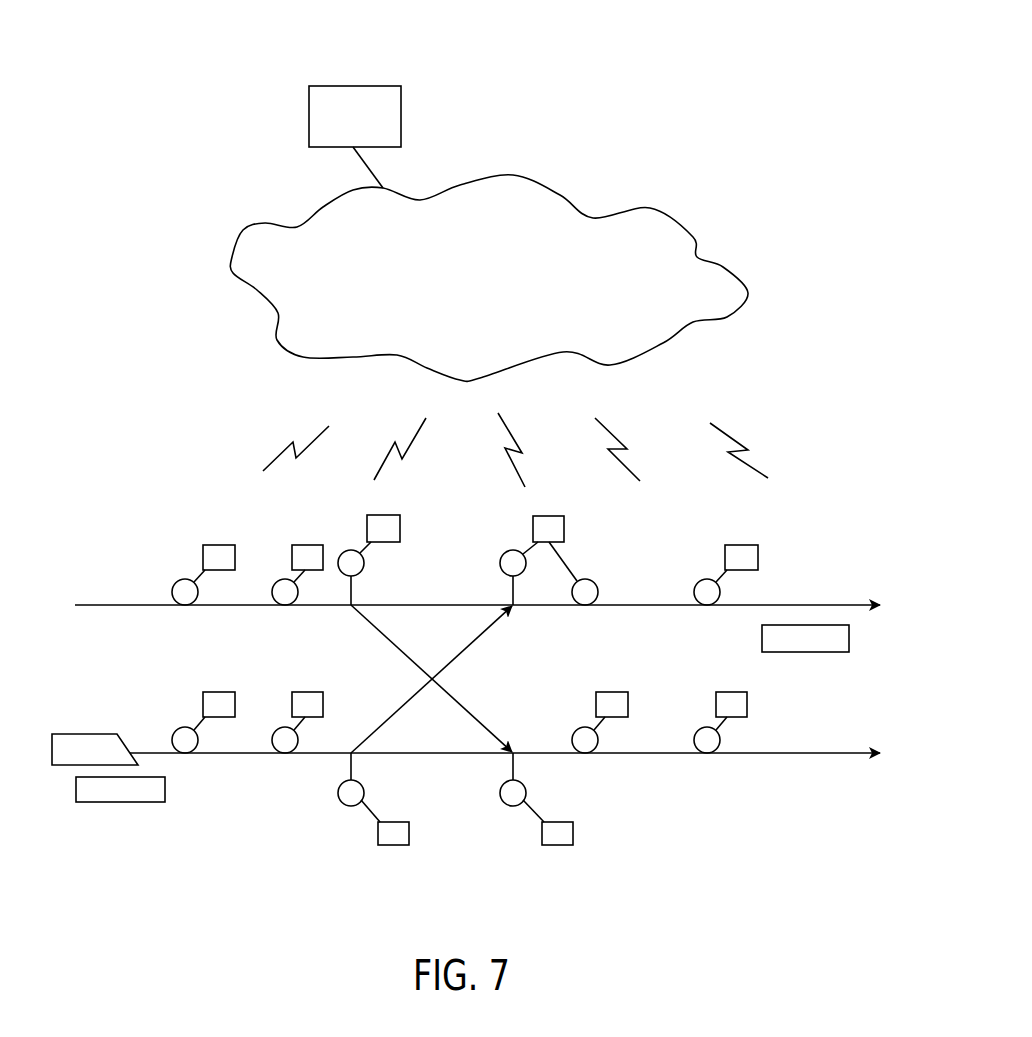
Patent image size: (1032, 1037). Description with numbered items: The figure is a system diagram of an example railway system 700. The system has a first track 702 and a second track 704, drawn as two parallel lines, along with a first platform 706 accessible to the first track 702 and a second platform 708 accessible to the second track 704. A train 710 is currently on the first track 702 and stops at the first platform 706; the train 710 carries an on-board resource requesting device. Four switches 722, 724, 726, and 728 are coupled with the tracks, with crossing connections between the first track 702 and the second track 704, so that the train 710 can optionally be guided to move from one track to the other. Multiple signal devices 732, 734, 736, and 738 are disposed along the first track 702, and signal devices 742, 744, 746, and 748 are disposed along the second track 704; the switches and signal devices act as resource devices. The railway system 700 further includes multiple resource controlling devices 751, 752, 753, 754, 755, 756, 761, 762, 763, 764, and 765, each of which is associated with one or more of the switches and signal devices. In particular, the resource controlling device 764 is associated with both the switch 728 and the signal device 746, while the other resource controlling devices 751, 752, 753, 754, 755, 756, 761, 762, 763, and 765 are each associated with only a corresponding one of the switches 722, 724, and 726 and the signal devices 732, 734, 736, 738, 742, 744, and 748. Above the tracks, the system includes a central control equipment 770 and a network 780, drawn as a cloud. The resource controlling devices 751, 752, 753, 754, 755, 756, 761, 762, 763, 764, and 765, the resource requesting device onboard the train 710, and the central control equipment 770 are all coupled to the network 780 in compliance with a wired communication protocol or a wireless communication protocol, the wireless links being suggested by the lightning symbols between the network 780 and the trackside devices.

The railway system 700 is at (694, 66).
The first track 702 is at (848, 753).
The second track 704 is at (848, 605).
The first platform 706 is at (118, 802).
The second platform 708 is at (805, 652).
The train 710 is at (85, 733).
The switch 722 is at (345, 806).
The switch 724 is at (507, 806).
The switch 726 is at (364, 565).
The switch 728 is at (500, 565).
The signal device 732 is at (188, 753).
The signal device 734 is at (285, 753).
The signal device 736 is at (583, 753).
The signal device 738 is at (705, 753).
The signal device 742 is at (183, 605).
The signal device 744 is at (283, 605).
The signal device 746 is at (583, 605).
The signal device 748 is at (705, 605).
The resource controlling device 751 is at (225, 692).
The resource controlling device 752 is at (315, 692).
The resource controlling device 753 is at (393, 845).
The resource controlling device 754 is at (557, 845).
The resource controlling device 755 is at (615, 692).
The resource controlling device 756 is at (735, 692).
The resource controlling device 761 is at (216, 545).
The resource controlling device 762 is at (302, 545).
The resource controlling device 763 is at (400, 525).
The resource controlling device 764 is at (564, 525).
The resource controlling device 765 is at (758, 555).
The central control equipment 770 is at (368, 129).
The network 780 is at (695, 237).